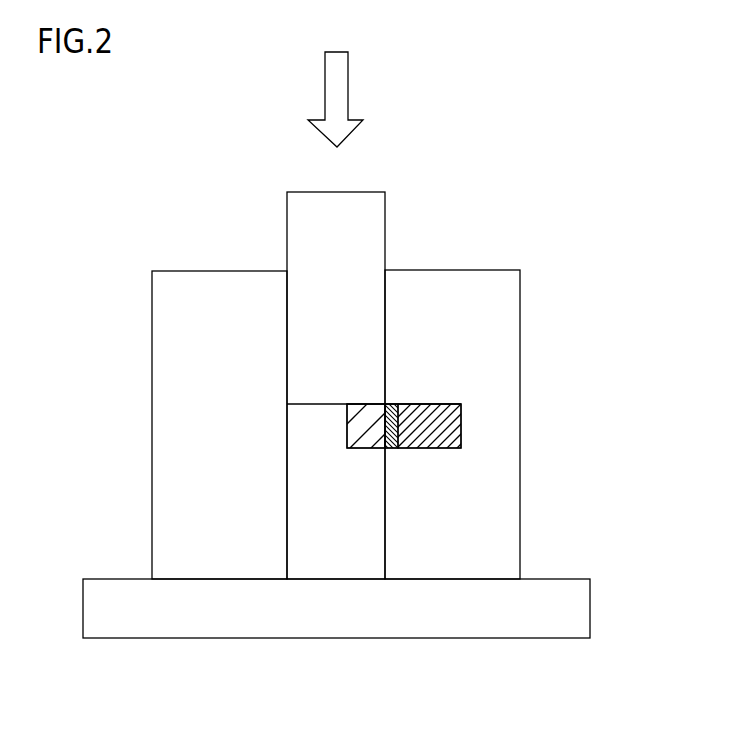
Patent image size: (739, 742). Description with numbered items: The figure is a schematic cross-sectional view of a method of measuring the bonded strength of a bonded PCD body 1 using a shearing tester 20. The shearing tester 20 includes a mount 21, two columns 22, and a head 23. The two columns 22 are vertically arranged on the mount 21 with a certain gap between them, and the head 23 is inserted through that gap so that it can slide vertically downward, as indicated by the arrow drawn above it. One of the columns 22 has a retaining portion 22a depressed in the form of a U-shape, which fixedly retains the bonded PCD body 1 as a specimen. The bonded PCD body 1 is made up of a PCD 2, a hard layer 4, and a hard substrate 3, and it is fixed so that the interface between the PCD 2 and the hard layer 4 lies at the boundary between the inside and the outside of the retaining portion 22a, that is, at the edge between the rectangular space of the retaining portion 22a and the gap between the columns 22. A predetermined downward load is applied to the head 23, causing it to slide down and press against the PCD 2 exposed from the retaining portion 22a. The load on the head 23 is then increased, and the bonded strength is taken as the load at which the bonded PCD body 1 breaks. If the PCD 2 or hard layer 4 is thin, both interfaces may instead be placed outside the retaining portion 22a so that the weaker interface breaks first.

The bonded PCD body 1 is at (461, 425).
The PCD 2 is at (363, 440).
The hard substrate 3 is at (437, 440).
The hard layer 4 is at (395, 448).
The shearing tester 20 is at (495, 246).
The mount 21 is at (492, 625).
The columns 22 is at (165, 531).
The retaining portion 22a is at (452, 402).
The head 23 is at (355, 200).